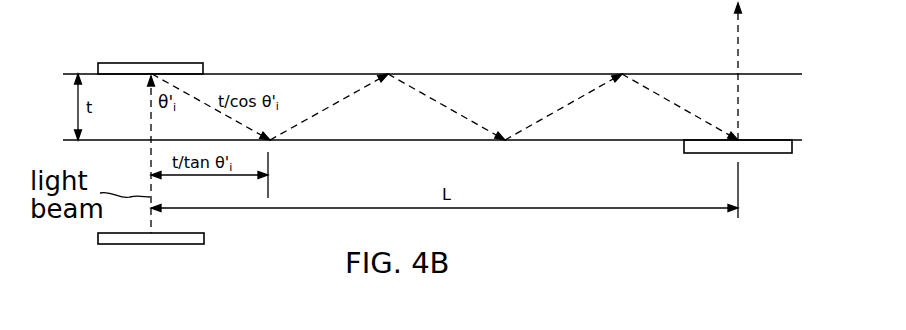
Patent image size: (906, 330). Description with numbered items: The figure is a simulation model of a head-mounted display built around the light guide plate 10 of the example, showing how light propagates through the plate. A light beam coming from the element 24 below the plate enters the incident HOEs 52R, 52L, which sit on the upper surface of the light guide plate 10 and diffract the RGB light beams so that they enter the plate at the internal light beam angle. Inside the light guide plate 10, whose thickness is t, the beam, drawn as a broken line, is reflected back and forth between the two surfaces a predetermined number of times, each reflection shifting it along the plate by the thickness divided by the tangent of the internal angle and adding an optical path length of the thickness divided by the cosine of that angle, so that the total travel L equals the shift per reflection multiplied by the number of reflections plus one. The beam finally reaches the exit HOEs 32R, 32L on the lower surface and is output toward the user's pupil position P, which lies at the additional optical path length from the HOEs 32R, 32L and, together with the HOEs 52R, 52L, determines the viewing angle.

The light guide plate 10 is at (487, 78).
The right incident HOE 52R is at (193, 63).
The left incident HOE 52L is at (182, 45).
The right exit HOE 32R is at (768, 153).
The left exit HOE 32L is at (739, 206).
The light source 24 is at (110, 244).
The pupil position P is at (245, 329).